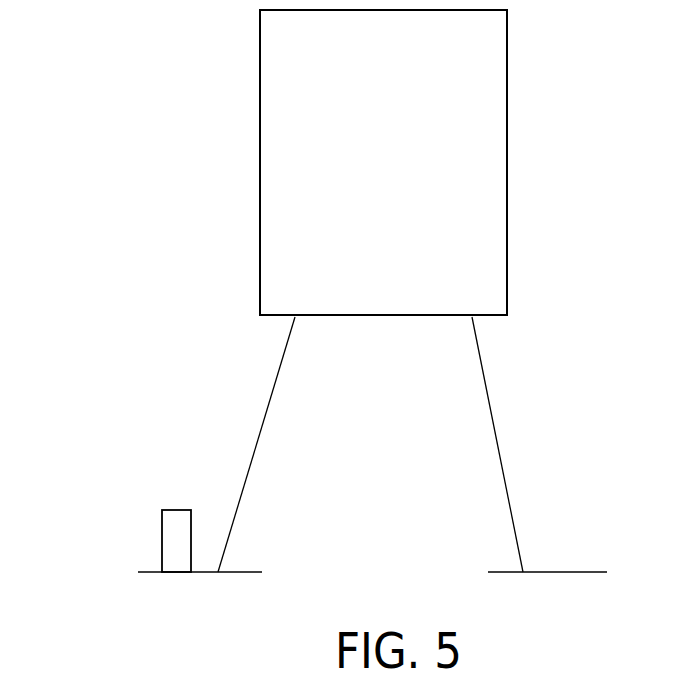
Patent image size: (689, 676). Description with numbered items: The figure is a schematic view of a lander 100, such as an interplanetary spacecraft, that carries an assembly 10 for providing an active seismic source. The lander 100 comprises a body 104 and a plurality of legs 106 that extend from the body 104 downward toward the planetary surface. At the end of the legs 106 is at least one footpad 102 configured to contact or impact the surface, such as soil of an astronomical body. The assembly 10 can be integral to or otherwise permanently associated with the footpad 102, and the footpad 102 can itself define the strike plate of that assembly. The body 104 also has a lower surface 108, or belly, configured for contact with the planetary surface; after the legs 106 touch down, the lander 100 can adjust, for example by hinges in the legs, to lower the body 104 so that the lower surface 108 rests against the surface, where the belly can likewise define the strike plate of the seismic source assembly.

The assembly for providing an active seismic source 10 is at (133, 502).
The lander 100 is at (345, 291).
The footpad 102 is at (253, 565).
The body 104 is at (500, 192).
The legs 106 is at (490, 405).
The lower surface 108 is at (385, 325).